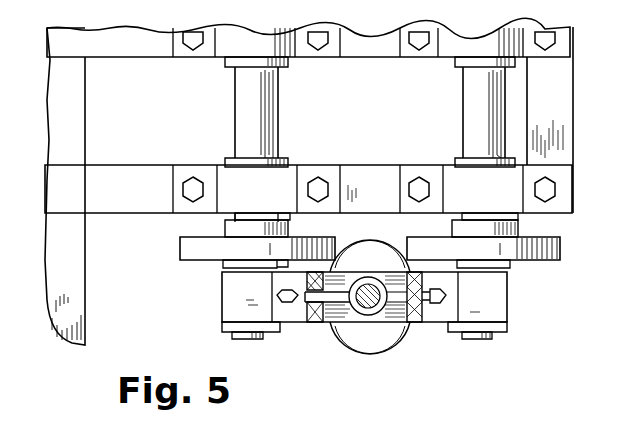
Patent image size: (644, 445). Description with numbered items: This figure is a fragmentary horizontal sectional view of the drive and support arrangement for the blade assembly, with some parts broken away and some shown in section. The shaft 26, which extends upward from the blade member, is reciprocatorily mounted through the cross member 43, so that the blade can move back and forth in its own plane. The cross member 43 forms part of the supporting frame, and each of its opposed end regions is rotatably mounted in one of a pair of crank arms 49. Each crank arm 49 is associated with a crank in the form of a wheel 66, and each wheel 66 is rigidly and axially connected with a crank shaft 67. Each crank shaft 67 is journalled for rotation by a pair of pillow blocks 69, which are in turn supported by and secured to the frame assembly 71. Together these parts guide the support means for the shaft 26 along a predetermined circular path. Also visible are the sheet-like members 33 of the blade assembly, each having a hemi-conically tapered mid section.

The frame assembly 71 is at (77, 103).
The pillow blocks 69 is at (224, 46).
The crank shaft 67 is at (268, 117).
The wheels 66 is at (335, 248).
The cross member 43 is at (500, 298).
The sheet-like members 33 is at (357, 337).
The shaft 26 is at (380, 304).
The crank arms 49 is at (253, 339).